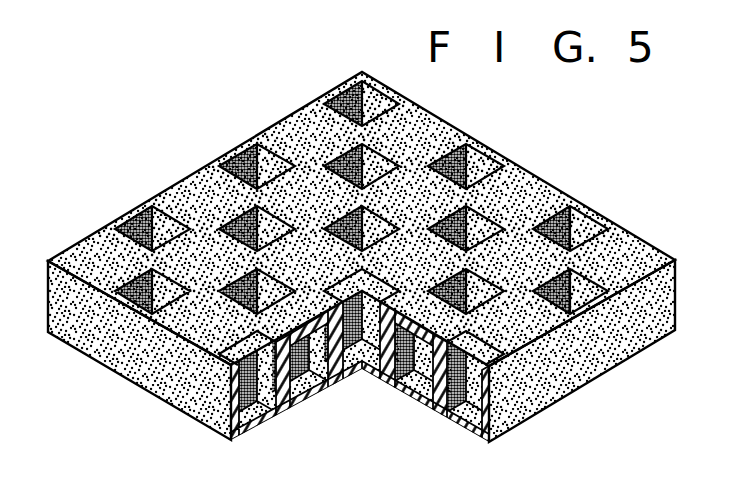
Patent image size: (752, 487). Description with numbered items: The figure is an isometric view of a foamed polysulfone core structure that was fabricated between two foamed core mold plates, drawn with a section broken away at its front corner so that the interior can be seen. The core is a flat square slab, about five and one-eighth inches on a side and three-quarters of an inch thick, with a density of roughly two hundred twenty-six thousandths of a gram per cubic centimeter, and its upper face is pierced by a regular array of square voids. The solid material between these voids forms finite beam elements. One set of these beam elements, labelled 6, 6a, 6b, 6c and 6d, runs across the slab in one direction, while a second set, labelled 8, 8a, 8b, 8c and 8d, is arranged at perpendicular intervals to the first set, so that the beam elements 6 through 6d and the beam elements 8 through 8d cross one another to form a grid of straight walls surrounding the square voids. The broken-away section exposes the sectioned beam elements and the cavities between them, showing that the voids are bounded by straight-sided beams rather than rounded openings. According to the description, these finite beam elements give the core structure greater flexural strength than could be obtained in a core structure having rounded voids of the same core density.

The finite beam element 6 is at (617, 227).
The finite beam element 6a is at (563, 203).
The finite beam element 6b is at (512, 168).
The finite beam element 6c is at (463, 137).
The finite beam element 6d is at (410, 103).
The finite beam element 8 is at (108, 233).
The finite beam element 8a is at (170, 208).
The finite beam element 8b is at (210, 172).
The finite beam element 8c is at (273, 143).
The finite beam element 8d is at (318, 105).